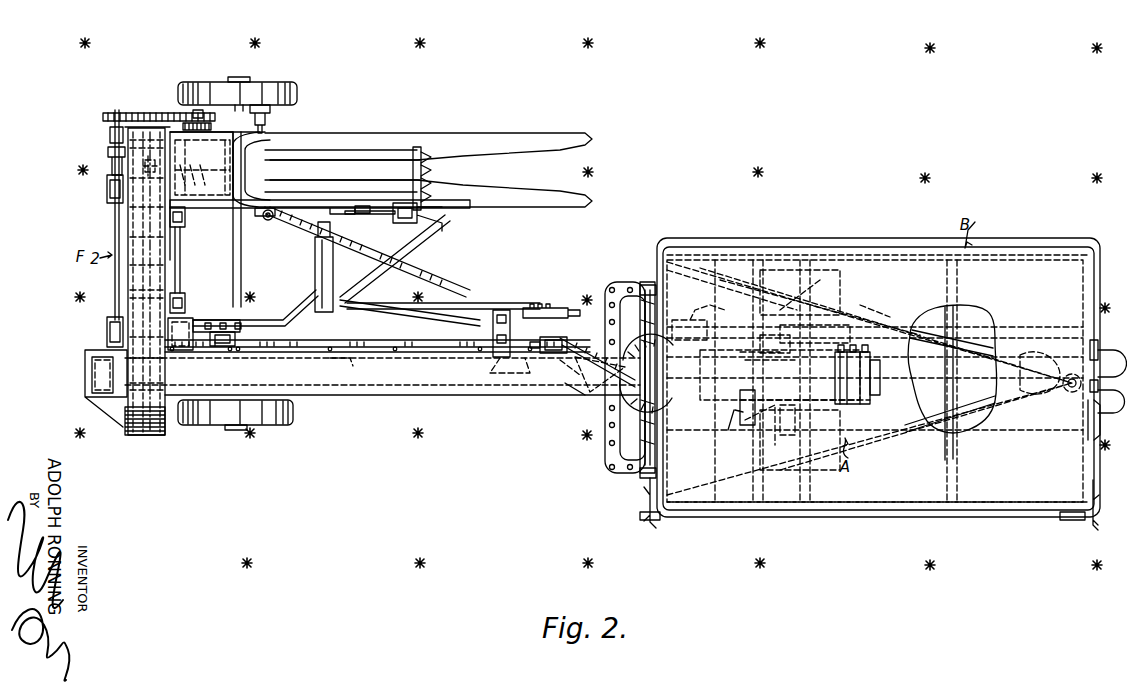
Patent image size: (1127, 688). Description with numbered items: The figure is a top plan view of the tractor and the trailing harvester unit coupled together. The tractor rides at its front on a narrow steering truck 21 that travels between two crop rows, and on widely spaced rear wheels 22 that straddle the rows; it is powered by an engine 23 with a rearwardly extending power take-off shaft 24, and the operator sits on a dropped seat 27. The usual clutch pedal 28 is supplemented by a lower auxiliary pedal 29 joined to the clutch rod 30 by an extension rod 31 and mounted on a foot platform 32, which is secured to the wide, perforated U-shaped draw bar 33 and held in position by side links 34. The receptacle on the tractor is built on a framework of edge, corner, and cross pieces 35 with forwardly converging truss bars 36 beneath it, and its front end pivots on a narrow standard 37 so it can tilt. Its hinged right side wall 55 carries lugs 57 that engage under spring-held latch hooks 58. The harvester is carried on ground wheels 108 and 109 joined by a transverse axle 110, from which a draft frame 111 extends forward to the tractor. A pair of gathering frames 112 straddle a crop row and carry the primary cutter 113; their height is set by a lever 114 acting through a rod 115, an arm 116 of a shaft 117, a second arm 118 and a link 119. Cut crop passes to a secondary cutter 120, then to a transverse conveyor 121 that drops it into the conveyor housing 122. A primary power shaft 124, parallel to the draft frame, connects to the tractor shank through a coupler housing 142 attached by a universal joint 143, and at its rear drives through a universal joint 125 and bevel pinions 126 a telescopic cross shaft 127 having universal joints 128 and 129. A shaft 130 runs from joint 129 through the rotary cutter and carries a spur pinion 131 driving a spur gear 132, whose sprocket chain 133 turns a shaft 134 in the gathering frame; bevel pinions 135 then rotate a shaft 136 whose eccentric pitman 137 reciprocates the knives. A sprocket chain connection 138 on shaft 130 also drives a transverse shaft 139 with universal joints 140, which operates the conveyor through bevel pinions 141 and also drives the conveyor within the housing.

The steering truck 21 is at (1108, 376).
The rear wheels 22 is at (800, 245).
The engine 23 is at (700, 391).
The power take-off shaft 24 is at (804, 407).
The seat 27 is at (638, 408).
The clutch pedal 28 is at (770, 335).
The auxiliary pedal 29 is at (698, 317).
The clutch rod 30 is at (846, 336).
The extension rod 31 is at (776, 318).
The foot platform 32 is at (642, 282).
The draw bar 33 is at (614, 282).
The side links 34 is at (648, 285).
The edge, corner, and cross pieces 35 is at (947, 395).
The truss bars 36 is at (923, 430).
The standard 37 is at (1098, 410).
The right side wall 55 is at (907, 512).
The lugs 57 is at (648, 519).
The latch hooks 58 is at (654, 520).
The ground wheel 108 is at (300, 91).
The ground wheel 109 is at (292, 416).
The transverse axle 110 is at (241, 269).
The draft frame 111 is at (347, 314).
The gathering frames 112 is at (542, 160).
The primary cutter 113 is at (424, 160).
The lever 114 is at (552, 308).
The rod 115 is at (465, 300).
The arm 116 is at (392, 290).
The shaft 117 is at (315, 264).
The arm 118 is at (342, 208).
The link 119 is at (362, 208).
The secondary cutter 120 is at (203, 167).
The transverse conveyor 121 is at (127, 285).
The conveyor housing 122 is at (384, 396).
The primary power shaft 124 is at (422, 341).
The universal joint 125 is at (230, 346).
The bevel pinions 126 is at (180, 350).
The cross shaft 127 is at (180, 275).
The universal joint 128 is at (185, 301).
The universal joint 129 is at (183, 225).
The shaft 130 is at (190, 122).
The spur pinion 131 is at (110, 134).
The spur gear 132 is at (201, 196).
The sprocket chain 133 is at (222, 105).
The shaft 134 is at (262, 140).
The bevel pinions 135 is at (278, 220).
The shaft 136 is at (308, 220).
The eccentric pitman 137 is at (415, 222).
The sprocket chain connection 138 is at (140, 113).
The shaft 139 is at (108, 156).
The universal joints 140 is at (107, 192).
The bevel pinions 141 is at (108, 152).
The coupler housing 142 is at (584, 360).
The universal joint 143 is at (548, 353).